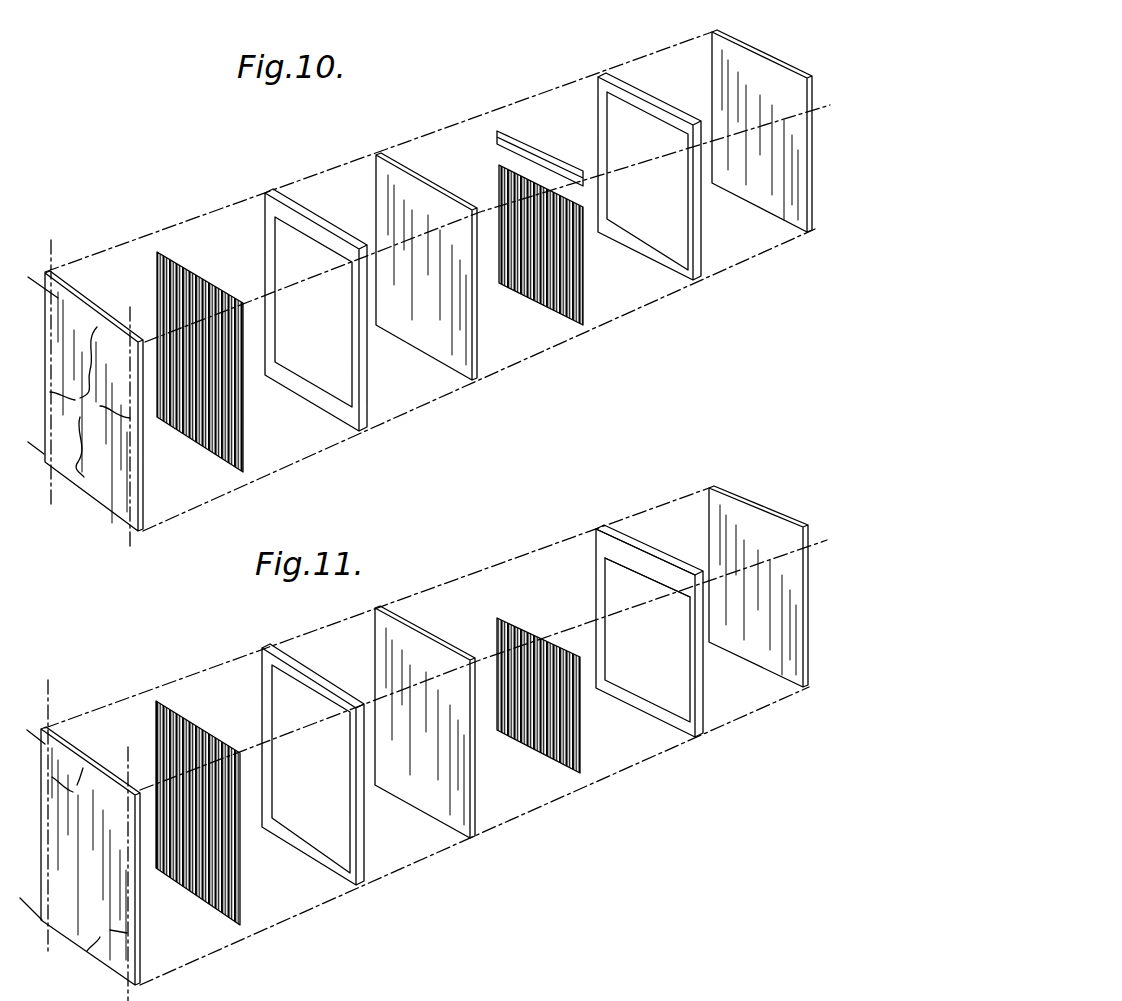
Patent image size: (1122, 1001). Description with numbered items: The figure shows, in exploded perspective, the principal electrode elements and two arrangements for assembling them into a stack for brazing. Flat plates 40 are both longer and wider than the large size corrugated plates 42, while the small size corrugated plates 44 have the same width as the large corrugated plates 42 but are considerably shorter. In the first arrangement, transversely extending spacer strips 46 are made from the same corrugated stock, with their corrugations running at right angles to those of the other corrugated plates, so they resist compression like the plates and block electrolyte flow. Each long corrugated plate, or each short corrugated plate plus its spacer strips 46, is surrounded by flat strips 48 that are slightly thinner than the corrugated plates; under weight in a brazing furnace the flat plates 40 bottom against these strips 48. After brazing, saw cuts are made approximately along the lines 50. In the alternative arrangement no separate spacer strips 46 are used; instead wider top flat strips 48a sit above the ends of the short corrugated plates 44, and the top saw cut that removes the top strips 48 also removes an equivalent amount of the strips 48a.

In FIG. 10, the flat plates 40 is at (83, 307).
In FIG. 11, the flat plates 40 is at (133, 950).
In FIG. 10, the large size corrugated plates 42 is at (200, 278).
In FIG. 11, the large size corrugated plates 42 is at (228, 898).
In FIG. 10, the small size corrugated plates 44 is at (530, 283).
In FIG. 11, the small size corrugated plates 44 is at (573, 750).
In FIG. 10, the transversely extending spacer strips 46 is at (535, 153).
In FIG. 10, the flat strips 48 is at (317, 236).
In FIG. 11, the flat strips 48 is at (313, 687).
In FIG. 11, the top flat strips 48a is at (648, 562).
In FIG. 10, the lines 50 is at (90, 402).
In FIG. 11, the lines 50 is at (89, 859).